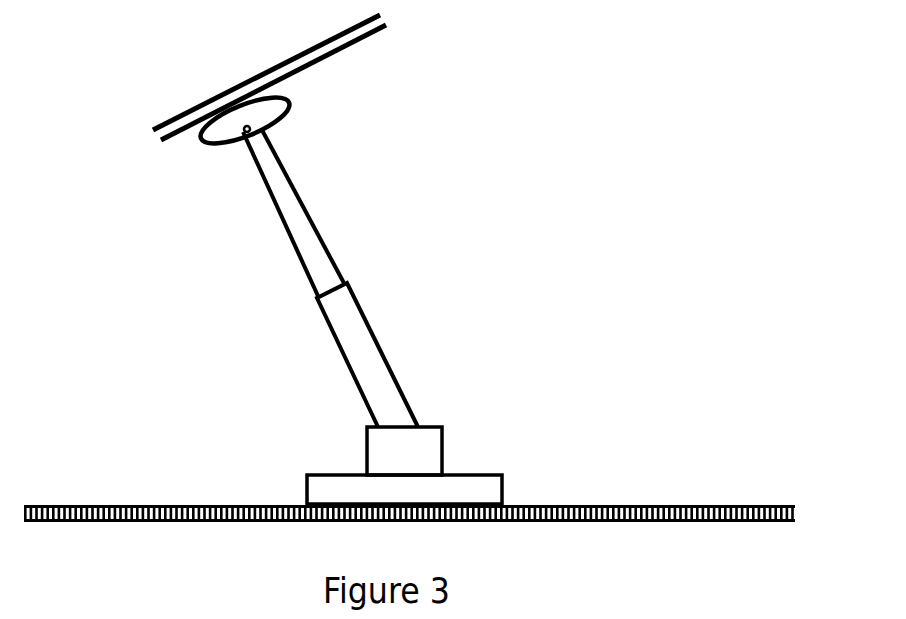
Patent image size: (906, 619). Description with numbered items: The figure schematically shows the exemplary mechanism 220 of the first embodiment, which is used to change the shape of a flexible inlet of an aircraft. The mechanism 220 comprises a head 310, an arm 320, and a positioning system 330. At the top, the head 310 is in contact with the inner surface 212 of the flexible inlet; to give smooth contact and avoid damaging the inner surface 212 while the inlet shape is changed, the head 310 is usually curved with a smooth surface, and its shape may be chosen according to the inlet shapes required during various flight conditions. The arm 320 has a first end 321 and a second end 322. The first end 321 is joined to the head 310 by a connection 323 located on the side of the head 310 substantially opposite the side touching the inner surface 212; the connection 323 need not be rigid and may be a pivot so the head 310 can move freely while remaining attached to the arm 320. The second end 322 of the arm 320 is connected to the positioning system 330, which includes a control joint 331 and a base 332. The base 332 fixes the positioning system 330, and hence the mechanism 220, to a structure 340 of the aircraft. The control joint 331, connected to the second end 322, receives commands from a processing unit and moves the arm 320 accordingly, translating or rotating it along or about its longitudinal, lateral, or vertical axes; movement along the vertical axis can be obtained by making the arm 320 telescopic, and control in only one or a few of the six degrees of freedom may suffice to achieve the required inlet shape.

The inner surface 212 is at (374, 39).
The mechanism 220 is at (628, 187).
The head 310 is at (197, 142).
The arm 320 is at (405, 282).
The first end 321 is at (287, 142).
The second end 322 is at (425, 417).
The connection 323 is at (237, 132).
The positioning system 330 is at (270, 478).
The control joint 331 is at (442, 452).
The base 332 is at (502, 490).
The structure 340 is at (80, 505).